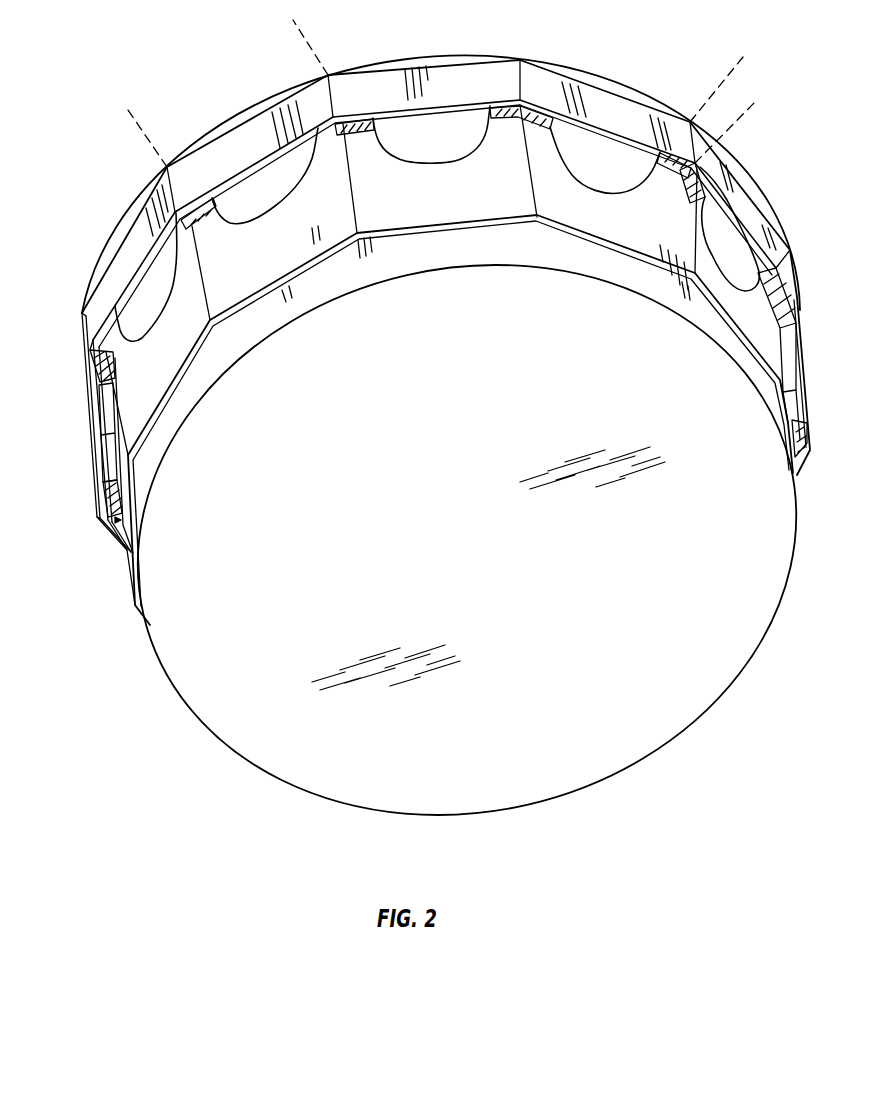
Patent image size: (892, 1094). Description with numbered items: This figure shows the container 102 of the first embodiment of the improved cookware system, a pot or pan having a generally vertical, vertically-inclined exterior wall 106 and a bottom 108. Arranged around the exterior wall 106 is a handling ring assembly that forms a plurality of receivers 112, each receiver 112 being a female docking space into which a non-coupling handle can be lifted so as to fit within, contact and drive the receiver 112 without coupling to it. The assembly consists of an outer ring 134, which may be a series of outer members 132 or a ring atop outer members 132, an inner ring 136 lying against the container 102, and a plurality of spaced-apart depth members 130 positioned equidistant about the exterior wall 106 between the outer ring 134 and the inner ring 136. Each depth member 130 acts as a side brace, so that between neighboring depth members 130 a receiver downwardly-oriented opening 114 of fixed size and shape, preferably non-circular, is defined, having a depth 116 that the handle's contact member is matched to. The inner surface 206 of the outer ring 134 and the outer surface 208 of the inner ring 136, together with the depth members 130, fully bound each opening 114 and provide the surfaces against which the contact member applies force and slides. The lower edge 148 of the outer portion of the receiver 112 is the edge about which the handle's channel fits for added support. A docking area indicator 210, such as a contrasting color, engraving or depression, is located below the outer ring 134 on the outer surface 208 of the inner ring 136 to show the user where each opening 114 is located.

The container 102 is at (218, 745).
The vertically-inclined exterior wall 106 is at (193, 380).
The bottom 108 is at (660, 740).
The receiver 112 is at (105, 297).
The receiver downwardly-oriented opening 114 is at (263, 170).
The depth 116 is at (736, 56).
The spaced-apart depth member 130 is at (358, 136).
The outer member 132 is at (292, 19).
The outer ring 134 is at (463, 77).
The inner ring 136 is at (137, 393).
The lower edge 148 is at (571, 168).
The inner surface 206 is at (101, 462).
The outer surface 208 is at (102, 523).
The docking area indicator 210 is at (142, 297).